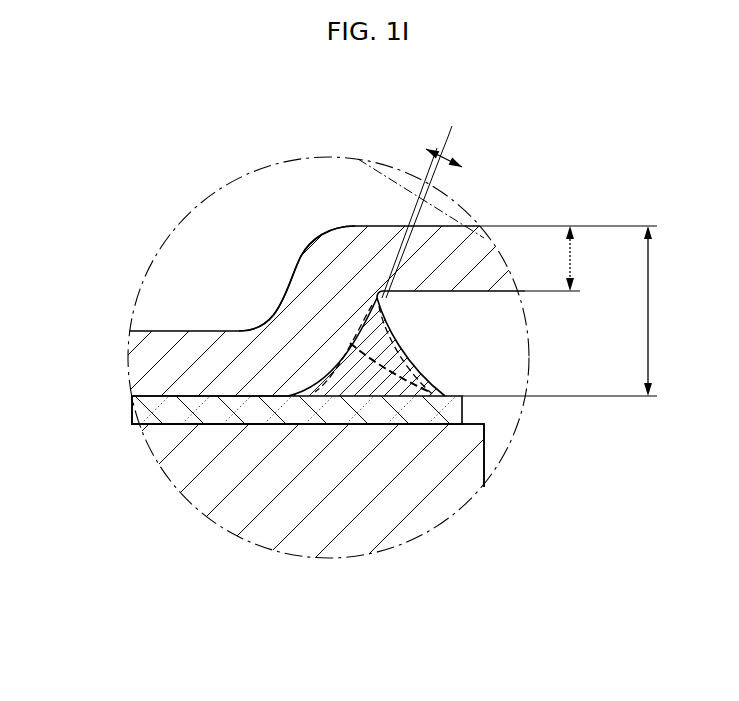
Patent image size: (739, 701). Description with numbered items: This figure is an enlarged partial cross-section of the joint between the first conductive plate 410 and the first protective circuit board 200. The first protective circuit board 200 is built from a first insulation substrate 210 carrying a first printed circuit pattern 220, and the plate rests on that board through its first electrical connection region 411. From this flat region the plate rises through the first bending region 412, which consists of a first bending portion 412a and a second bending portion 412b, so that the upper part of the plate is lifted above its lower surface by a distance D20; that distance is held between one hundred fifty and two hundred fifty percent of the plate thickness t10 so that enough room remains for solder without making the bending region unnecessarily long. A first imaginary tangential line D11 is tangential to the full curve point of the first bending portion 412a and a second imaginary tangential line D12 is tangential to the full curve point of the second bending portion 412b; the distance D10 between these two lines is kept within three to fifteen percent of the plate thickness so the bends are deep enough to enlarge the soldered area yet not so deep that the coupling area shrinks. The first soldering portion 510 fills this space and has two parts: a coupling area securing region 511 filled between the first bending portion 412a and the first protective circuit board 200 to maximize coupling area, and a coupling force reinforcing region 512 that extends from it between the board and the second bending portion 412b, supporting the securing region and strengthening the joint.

The first conductive plate 410 is at (303, 232).
The first electrical connection region 411 is at (157, 395).
The first bending region 412 is at (582, 190).
The first bending portion 412a is at (327, 367).
The second bending portion 412b is at (386, 306).
The first protective circuit board 200 is at (492, 466).
The first insulation substrate 210 is at (222, 532).
The first printed circuit pattern 220 is at (182, 417).
The first soldering portion 510 is at (368, 488).
The coupling area securing region 511 is at (341, 370).
The coupling force reinforcing region 512 is at (408, 365).
The distance between first and second imaginary tangential lines D10 is at (429, 196).
The first imaginary tangential line D11 is at (424, 164).
The second imaginary tangential line D12 is at (427, 156).
The thickness of the conductive plate t10 is at (568, 258).
The distance from lower surface to upper surface of the conductive plate D20 is at (580, 311).